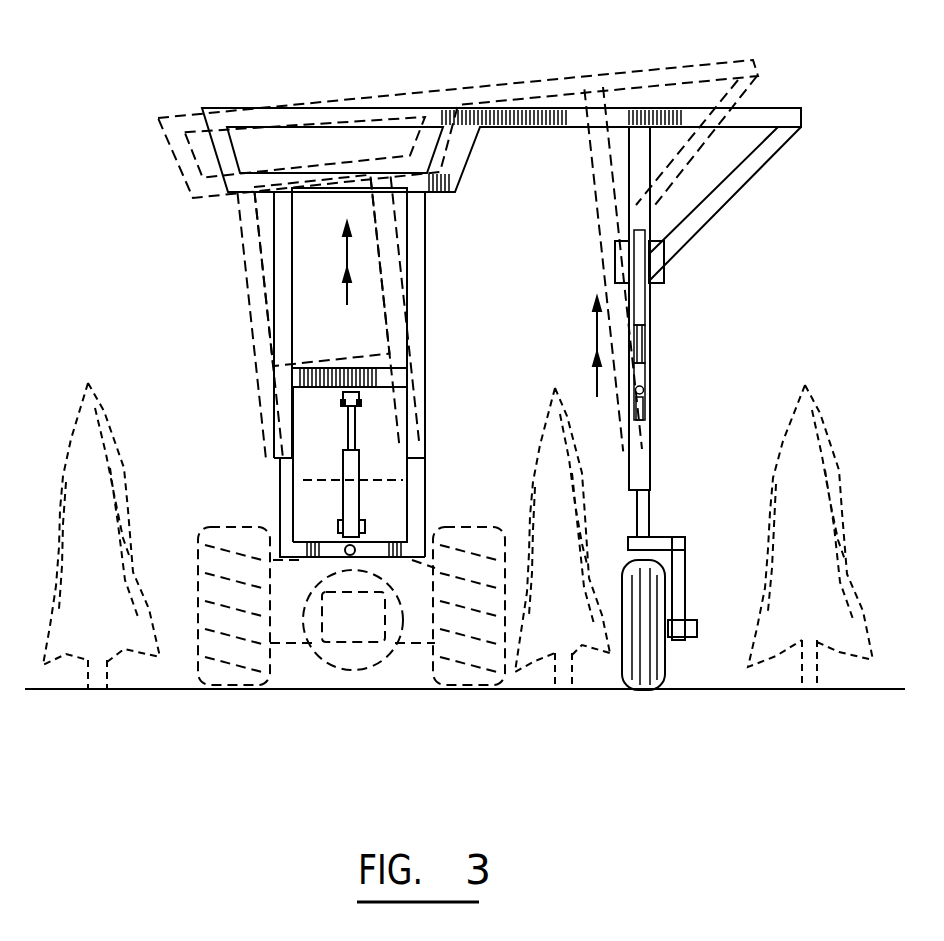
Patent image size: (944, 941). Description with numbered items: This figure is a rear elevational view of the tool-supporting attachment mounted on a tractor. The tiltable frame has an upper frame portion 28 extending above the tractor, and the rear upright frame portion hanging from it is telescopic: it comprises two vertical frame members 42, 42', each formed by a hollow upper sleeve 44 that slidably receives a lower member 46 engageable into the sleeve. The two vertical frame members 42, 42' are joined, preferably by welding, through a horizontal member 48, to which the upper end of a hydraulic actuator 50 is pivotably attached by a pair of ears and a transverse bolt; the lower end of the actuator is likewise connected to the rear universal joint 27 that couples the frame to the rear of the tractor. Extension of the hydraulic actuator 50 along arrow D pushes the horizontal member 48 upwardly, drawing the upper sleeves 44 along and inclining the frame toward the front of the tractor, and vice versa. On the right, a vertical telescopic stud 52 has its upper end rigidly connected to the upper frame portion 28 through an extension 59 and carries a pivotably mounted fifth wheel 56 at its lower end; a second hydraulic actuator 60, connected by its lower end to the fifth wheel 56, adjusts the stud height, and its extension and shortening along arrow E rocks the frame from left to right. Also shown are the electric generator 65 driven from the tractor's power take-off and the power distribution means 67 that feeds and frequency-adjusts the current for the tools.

The upper frame portion 28 is at (340, 107).
The extension 59 is at (752, 120).
The power distribution means 67 is at (618, 266).
The vertical frame member 42 is at (238, 325).
The vertical frame member 42' is at (449, 374).
The horizontal member 48 is at (380, 369).
The hollow upper sleeve 44 is at (284, 425).
The lower member 46 is at (282, 485).
The hydraulic actuator 50 is at (359, 480).
The vertical telescopic stud 52 is at (648, 348).
The hydraulic actuator 60 is at (650, 452).
The fifth wheel 56 is at (667, 550).
The universal joint 27 is at (335, 553).
The electric generator 65 is at (372, 650).
The arrow D is at (336, 263).
The arrow E is at (588, 347).